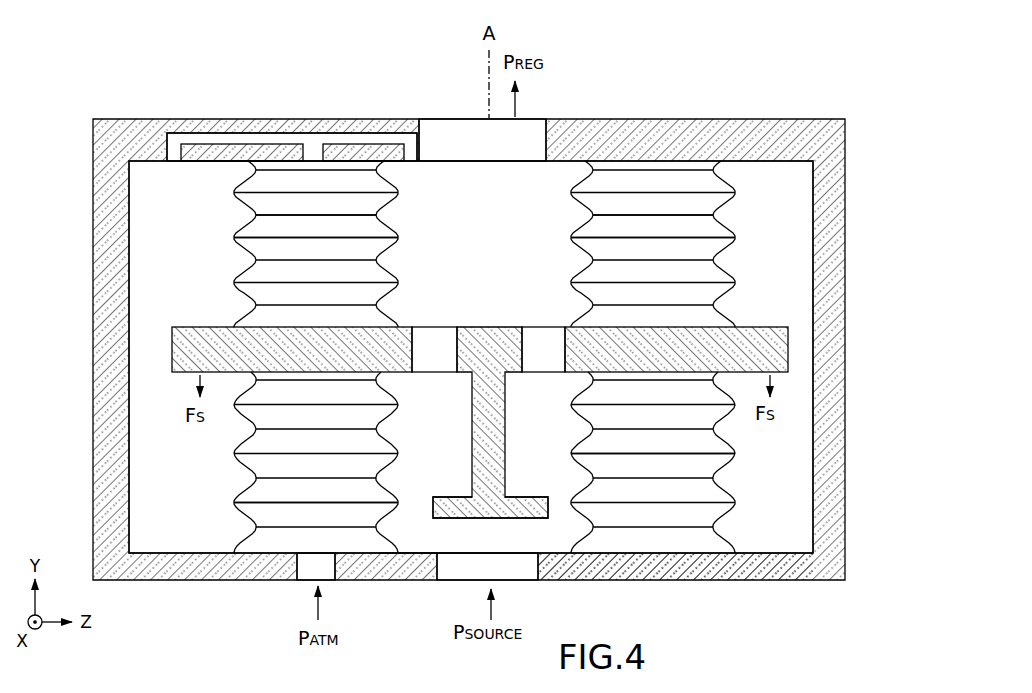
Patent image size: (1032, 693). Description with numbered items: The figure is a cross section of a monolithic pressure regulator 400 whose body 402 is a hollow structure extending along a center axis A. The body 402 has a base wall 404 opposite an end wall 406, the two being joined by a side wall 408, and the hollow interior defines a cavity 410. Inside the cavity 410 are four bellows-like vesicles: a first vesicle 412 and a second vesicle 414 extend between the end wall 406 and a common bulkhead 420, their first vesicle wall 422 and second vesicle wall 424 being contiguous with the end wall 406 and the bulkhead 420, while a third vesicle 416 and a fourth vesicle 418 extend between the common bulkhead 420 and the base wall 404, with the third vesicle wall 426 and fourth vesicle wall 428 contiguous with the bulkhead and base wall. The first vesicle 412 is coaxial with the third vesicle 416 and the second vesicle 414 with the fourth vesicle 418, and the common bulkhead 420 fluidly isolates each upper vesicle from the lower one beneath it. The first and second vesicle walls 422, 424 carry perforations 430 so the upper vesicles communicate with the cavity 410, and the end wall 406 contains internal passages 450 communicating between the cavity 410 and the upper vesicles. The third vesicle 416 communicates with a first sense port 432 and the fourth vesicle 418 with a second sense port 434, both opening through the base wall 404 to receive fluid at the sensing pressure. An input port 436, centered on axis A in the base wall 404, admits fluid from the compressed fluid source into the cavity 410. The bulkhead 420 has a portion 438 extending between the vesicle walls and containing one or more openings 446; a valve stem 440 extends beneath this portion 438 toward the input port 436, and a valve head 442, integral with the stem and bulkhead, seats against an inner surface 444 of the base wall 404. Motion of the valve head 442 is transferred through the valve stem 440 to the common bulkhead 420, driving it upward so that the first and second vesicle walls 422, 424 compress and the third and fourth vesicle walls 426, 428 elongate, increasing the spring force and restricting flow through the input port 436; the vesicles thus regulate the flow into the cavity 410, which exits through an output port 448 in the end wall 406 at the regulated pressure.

The monolithic pressure regulator 400 is at (782, 67).
The body 402 is at (872, 147).
The base wall 404 is at (767, 573).
The end wall 406 is at (797, 130).
The side wall 408 is at (833, 305).
The cavity 410 is at (475, 241).
The first vesicle 412 is at (405, 223).
The second vesicle 414 is at (737, 220).
The third vesicle 416 is at (400, 446).
The fourth vesicle 418 is at (725, 433).
The common bulkhead 420 is at (743, 332).
The first vesicle wall 422 is at (398, 242).
The second vesicle wall 424 is at (733, 247).
The third vesicle wall 426 is at (388, 490).
The fourth vesicle wall 428 is at (733, 463).
The perforations 430 is at (250, 207).
The first sense port 432 is at (312, 572).
The second sense port 434 is at (672, 582).
The input port 436 is at (448, 572).
The portion of common bulkhead 438 is at (497, 317).
The valve stem 440 is at (497, 408).
The valve head 442 is at (517, 500).
The inner surface of base wall 444 is at (417, 552).
The openings 446 is at (437, 327).
The output port 448 is at (532, 123).
The internal passages 450 is at (333, 140).